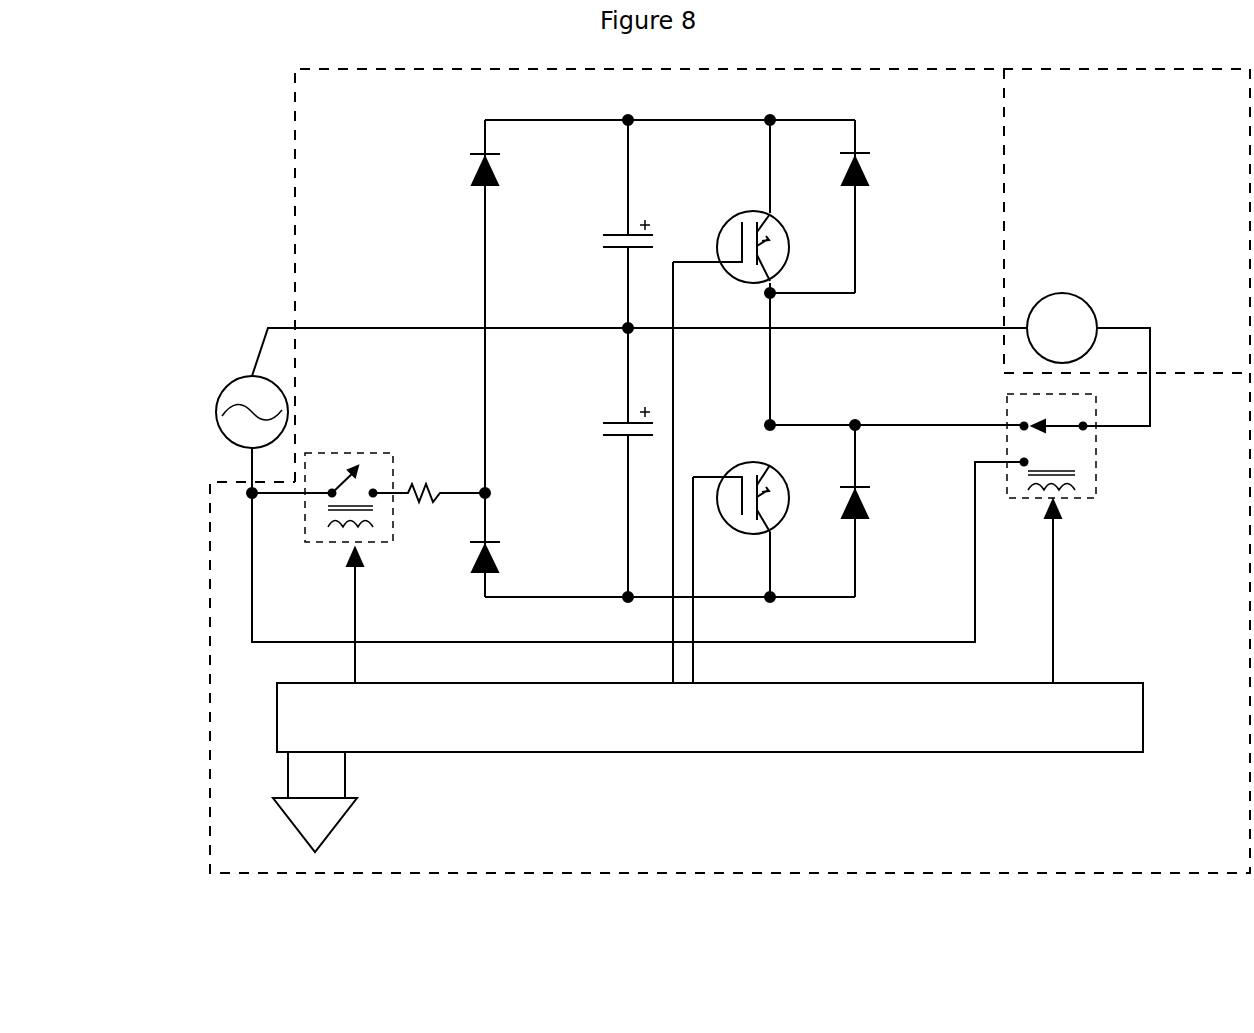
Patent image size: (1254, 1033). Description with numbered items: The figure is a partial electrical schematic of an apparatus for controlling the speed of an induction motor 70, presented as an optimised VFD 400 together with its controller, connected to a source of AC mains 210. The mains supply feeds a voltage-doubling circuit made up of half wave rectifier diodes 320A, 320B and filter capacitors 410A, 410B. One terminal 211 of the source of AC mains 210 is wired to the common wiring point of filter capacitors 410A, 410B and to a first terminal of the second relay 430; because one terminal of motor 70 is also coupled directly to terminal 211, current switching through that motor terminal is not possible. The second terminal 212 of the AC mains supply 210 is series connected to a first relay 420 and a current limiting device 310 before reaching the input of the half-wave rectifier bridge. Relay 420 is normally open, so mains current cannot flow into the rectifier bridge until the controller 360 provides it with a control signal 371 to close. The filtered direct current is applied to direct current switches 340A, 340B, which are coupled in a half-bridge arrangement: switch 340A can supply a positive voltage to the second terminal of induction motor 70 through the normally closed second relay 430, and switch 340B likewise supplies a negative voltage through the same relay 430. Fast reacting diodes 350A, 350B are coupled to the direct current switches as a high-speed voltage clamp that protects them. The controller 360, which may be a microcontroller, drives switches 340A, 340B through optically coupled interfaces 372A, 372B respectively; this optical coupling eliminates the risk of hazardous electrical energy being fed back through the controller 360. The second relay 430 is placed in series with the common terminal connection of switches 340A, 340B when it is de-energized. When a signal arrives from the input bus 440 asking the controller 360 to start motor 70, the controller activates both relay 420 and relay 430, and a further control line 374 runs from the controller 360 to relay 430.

The induction motor 70 is at (1078, 302).
The source of AC mains 210 is at (250, 375).
The first terminal of the source of AC mains 211 is at (388, 326).
The second terminal of AC mains supply 212 is at (258, 470).
The current limiting device 310 is at (422, 480).
The half wave rectifier diode 320A is at (472, 170).
The half wave rectifier diode 320B is at (470, 556).
The direct current switch 340A is at (748, 212).
The direct current switch 340B is at (750, 462).
The fast reacting diode 350A is at (885, 168).
The fast reacting diode 350B is at (866, 500).
The controller 360 is at (1145, 753).
The control signal 371 is at (352, 652).
The optically coupled interface 372A is at (670, 655).
The optically coupled interface 372B is at (696, 656).
The motor relay control signal 374 is at (1056, 592).
The optimised VFD 400 is at (292, 118).
The filter capacitor 410A is at (617, 232).
The filter capacitor 410B is at (617, 420).
The first relay 420 is at (325, 547).
The second relay 430 is at (1102, 488).
The input bus 440 is at (358, 812).